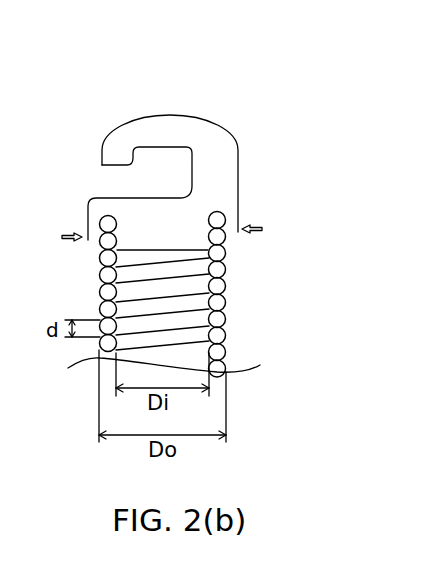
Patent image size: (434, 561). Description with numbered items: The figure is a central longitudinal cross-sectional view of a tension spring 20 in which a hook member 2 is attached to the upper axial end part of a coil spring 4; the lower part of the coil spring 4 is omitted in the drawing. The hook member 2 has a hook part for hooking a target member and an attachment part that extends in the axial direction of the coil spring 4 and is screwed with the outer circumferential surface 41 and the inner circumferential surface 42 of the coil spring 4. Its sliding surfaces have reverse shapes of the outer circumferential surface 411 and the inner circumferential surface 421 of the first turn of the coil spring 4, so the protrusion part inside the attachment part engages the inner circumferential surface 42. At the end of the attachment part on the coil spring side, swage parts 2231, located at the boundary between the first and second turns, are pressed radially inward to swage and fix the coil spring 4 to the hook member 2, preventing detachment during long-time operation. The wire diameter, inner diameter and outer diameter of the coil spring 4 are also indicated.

The tension spring 20 is at (292, 115).
The hook member 2 is at (233, 176).
The outer circumferential surface of the first turn 411 is at (97, 225).
The swage part 2231 is at (160, 234).
The inner circumferential surface of the first turn 421 is at (205, 221).
The outer circumferential surface 41 is at (228, 250).
The inner circumferential surface 42 is at (120, 273).
The coil spring 4 is at (215, 300).